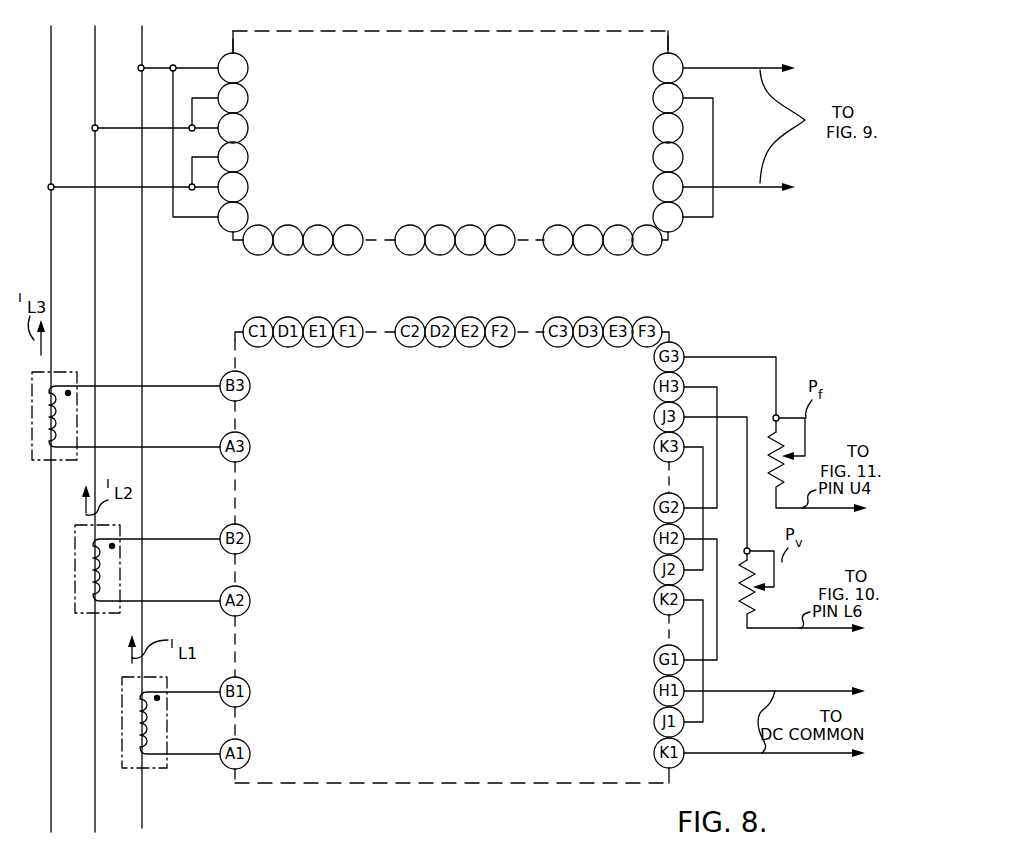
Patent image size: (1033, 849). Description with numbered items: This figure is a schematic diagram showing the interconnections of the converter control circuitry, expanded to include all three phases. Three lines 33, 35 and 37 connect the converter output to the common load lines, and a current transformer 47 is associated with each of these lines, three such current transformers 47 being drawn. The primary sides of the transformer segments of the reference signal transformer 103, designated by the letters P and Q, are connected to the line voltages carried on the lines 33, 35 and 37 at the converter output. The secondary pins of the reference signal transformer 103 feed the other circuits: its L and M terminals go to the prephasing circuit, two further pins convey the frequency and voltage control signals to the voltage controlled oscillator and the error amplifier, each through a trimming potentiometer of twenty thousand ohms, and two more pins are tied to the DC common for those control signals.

The line 33 is at (142, 316).
The line 35 is at (95, 283).
The line 37 is at (51, 251).
The current transformer 47 is at (37, 461).
The reference signal transformer 103 is at (476, 128).